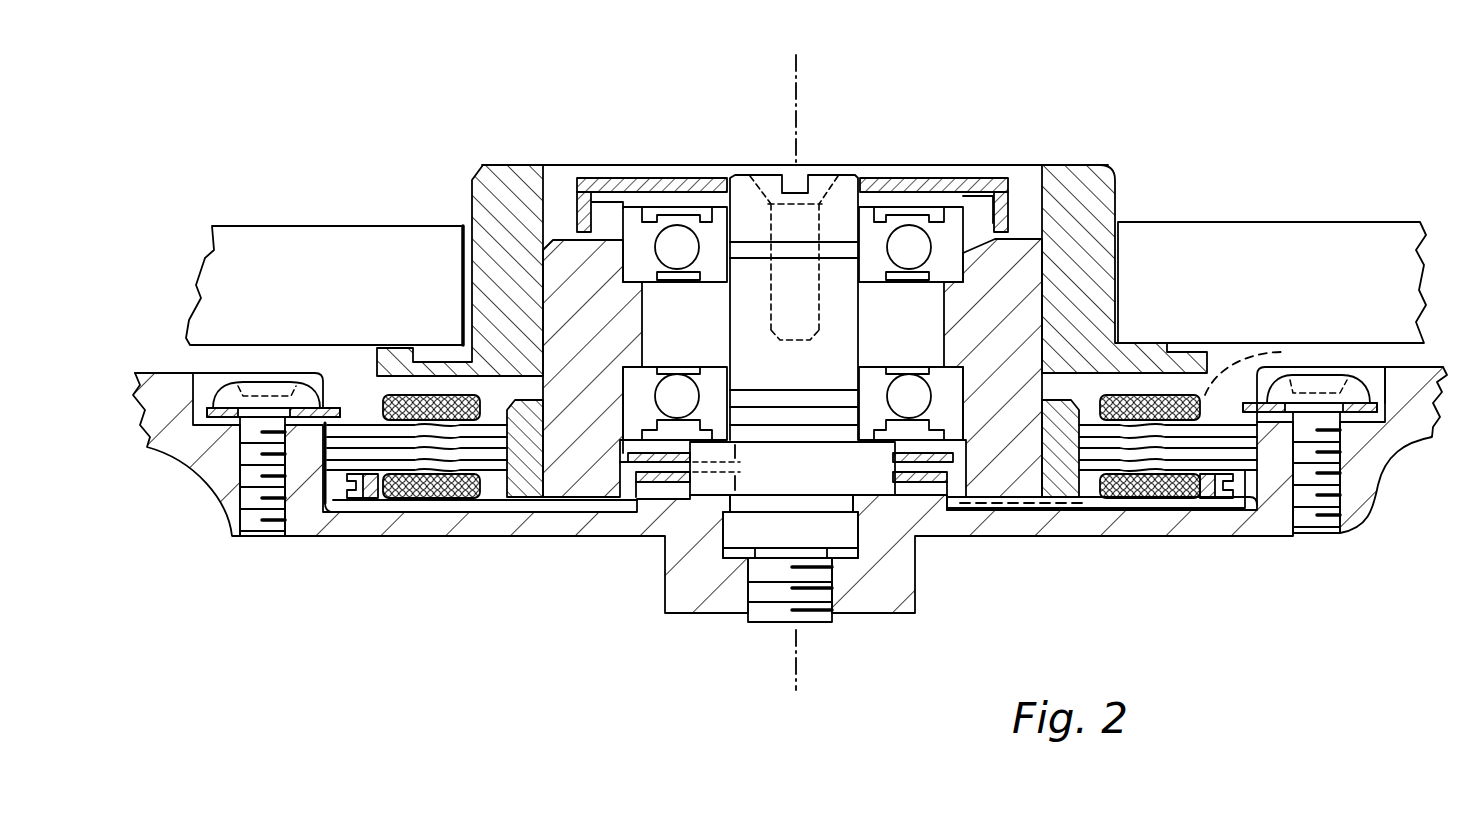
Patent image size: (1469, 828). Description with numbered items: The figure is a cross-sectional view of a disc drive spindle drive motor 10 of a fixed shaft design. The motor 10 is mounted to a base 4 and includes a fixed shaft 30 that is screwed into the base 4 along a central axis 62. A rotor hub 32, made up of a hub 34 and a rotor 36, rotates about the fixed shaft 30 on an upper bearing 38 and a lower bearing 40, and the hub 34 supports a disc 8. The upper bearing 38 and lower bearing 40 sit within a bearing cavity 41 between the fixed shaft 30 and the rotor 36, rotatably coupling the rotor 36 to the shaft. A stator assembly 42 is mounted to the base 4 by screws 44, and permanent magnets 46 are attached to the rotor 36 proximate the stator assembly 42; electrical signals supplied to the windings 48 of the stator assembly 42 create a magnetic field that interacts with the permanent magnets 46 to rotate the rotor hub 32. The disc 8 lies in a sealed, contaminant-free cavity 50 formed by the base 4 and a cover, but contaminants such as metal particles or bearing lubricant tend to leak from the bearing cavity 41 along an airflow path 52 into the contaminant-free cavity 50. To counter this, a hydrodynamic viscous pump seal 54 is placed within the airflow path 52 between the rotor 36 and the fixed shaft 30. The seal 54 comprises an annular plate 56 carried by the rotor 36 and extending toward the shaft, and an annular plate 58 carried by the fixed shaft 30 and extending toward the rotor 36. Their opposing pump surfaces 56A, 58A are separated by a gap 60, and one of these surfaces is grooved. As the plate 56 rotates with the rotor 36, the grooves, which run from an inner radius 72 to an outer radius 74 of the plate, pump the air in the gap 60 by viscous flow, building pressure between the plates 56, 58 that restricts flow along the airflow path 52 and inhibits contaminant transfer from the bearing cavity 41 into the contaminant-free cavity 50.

The base 4 is at (213, 490).
The disc 8 is at (330, 235).
The spindle drive motor 10 is at (1224, 126).
The fixed shaft 30 is at (848, 165).
The rotor hub 32 is at (1078, 191).
The hub 34 is at (1083, 222).
The rotor 36 is at (1030, 243).
The upper bearing 38 is at (668, 246).
The lower bearing 40 is at (676, 392).
The bearing cavity 41 is at (870, 329).
The stator assembly 42 is at (375, 507).
The screws 44 is at (268, 395).
The permanent magnets 46 is at (528, 462).
The windings 48 is at (420, 487).
The contaminant-free cavity 50 is at (1367, 184).
The airflow path 52 is at (1245, 357).
The viscous pump seal 54 is at (648, 506).
The annular plate 56 is at (614, 448).
The pump surface 56A is at (632, 455).
The annular plate 58 is at (710, 525).
The pump surface 58A is at (660, 468).
The gap 60 is at (742, 488).
The central axis 62 is at (797, 90).
The inner radius 72 is at (875, 450).
The outer radius 74 is at (975, 485).